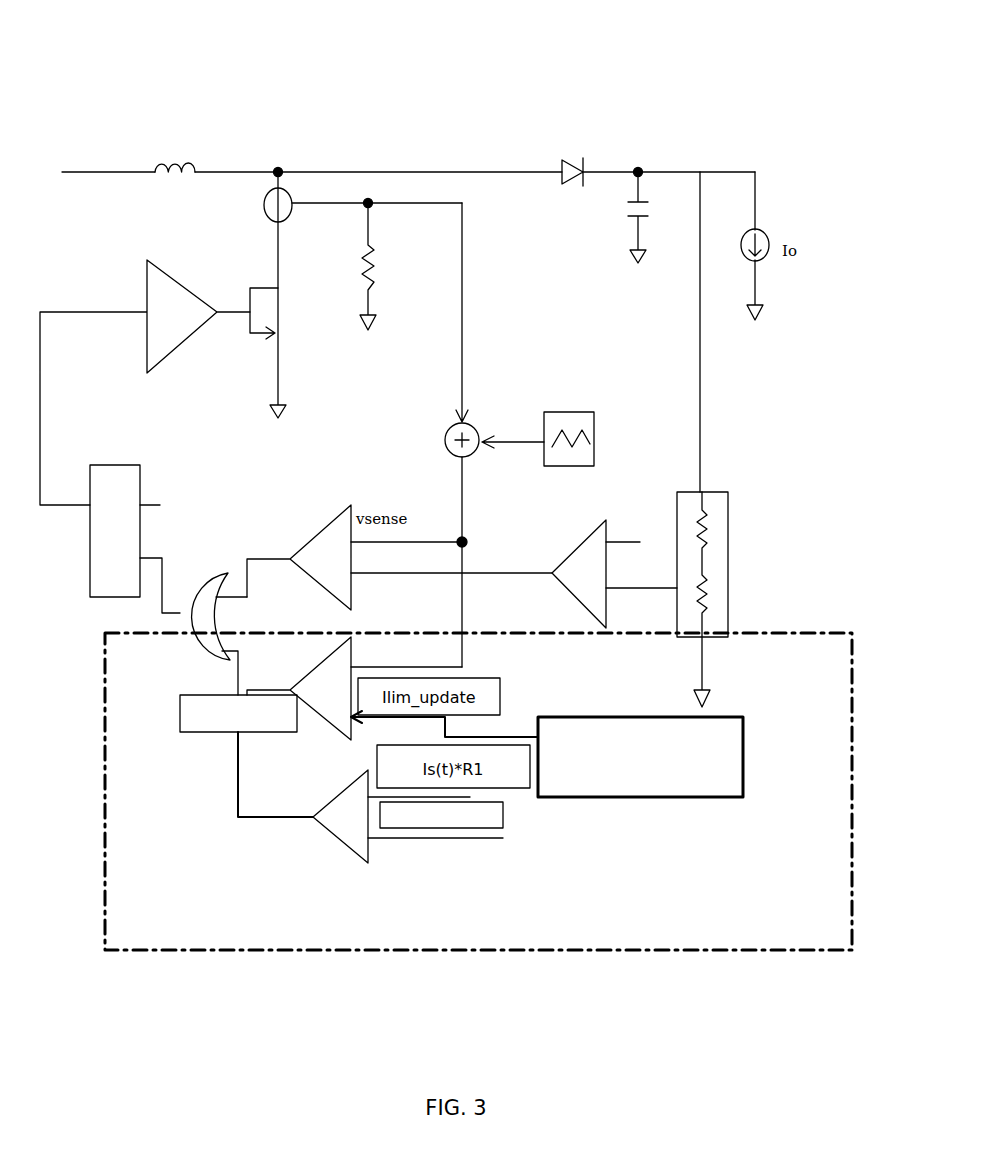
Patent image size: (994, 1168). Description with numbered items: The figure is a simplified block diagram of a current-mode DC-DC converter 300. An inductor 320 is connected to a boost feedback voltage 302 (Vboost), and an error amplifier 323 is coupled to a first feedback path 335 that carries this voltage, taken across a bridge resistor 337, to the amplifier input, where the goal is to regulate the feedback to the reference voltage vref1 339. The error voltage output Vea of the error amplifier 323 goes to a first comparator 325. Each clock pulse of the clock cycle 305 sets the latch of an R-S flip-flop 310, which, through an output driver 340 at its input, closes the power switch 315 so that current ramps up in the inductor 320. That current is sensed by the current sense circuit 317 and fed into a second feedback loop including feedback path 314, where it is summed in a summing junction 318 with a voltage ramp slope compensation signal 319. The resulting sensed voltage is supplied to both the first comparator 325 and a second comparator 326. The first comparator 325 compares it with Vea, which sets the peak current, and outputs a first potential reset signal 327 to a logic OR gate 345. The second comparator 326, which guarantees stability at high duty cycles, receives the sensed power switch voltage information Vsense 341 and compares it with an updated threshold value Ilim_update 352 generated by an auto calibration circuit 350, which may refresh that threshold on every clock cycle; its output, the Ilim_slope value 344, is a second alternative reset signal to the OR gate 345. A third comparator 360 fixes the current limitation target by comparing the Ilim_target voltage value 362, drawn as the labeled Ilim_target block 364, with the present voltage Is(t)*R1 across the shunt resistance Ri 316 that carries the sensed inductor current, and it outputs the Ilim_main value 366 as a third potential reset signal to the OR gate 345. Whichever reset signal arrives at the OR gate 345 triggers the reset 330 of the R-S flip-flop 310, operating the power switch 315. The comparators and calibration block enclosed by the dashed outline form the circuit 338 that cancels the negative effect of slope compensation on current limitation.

The current-mode DC-DC converter 300 is at (90, 78).
The boost feedback voltage 302 is at (638, 168).
The clock cycle 305 is at (147, 503).
The R-S flip-flop 310 is at (92, 535).
The feedback path 314 is at (463, 210).
The power switch 315 is at (282, 295).
The shunt resistance Ri 316 is at (375, 290).
The current sense circuit 317 is at (292, 217).
The summing junction 318 is at (478, 452).
The voltage ramp slope compensation signal 319 is at (596, 420).
The inductor 320 is at (170, 178).
The error amplifier 323 is at (573, 544).
The first comparator 325 is at (352, 577).
The second comparator 326 is at (325, 662).
The first potential reset signal 327 is at (258, 557).
The reset 330 is at (163, 555).
The first feedback path 335 is at (700, 355).
The bridge resistor 337 is at (728, 530).
The circuit 338 is at (260, 950).
The reference voltage vref1 339 is at (640, 542).
The output driver 340 is at (147, 300).
The sensed power switch voltage information Vsense 341 is at (427, 662).
The Ilim_slope value 344 is at (258, 688).
The logic OR gate 345 is at (182, 640).
The auto calibration circuit 350 is at (707, 800).
The updated threshold value Ilim_update 352 is at (480, 742).
The third comparator 360 is at (335, 802).
The Ilim_target voltage value 362 is at (412, 840).
The current limit target 364 is at (467, 787).
The Ilim_main value 366 is at (235, 802).